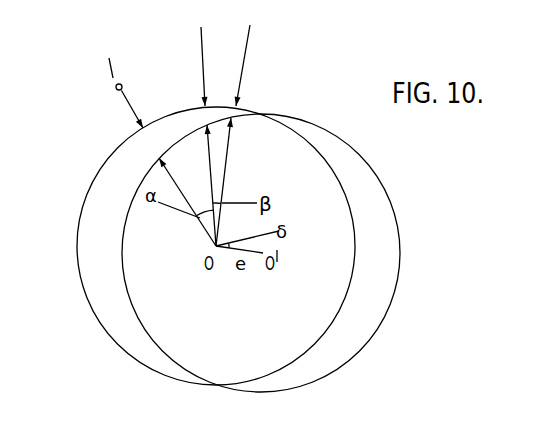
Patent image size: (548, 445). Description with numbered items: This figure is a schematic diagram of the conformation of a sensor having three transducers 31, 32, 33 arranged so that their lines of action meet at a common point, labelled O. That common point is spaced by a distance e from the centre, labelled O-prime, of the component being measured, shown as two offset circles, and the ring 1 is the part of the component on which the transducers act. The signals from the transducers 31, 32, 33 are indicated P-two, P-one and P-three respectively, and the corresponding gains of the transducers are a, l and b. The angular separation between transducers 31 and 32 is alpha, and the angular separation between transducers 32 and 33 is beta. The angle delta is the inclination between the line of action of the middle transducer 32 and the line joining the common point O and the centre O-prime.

The ring 1 is at (216, 225).
The transducer 31 is at (114, 84).
The transducer 32 is at (203, 58).
The transducer 33 is at (242, 62).